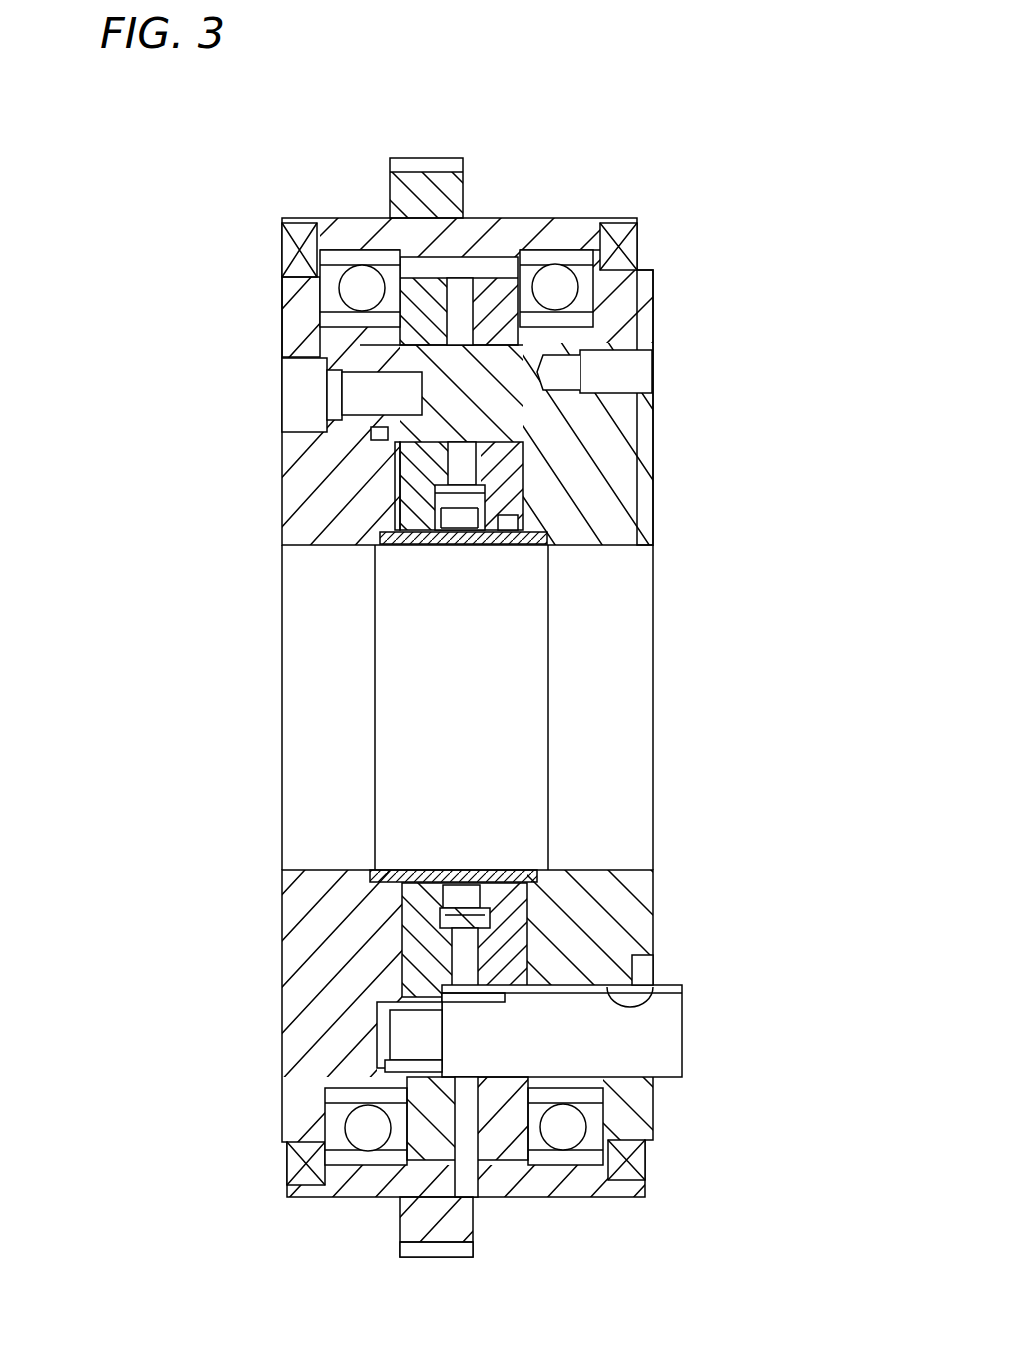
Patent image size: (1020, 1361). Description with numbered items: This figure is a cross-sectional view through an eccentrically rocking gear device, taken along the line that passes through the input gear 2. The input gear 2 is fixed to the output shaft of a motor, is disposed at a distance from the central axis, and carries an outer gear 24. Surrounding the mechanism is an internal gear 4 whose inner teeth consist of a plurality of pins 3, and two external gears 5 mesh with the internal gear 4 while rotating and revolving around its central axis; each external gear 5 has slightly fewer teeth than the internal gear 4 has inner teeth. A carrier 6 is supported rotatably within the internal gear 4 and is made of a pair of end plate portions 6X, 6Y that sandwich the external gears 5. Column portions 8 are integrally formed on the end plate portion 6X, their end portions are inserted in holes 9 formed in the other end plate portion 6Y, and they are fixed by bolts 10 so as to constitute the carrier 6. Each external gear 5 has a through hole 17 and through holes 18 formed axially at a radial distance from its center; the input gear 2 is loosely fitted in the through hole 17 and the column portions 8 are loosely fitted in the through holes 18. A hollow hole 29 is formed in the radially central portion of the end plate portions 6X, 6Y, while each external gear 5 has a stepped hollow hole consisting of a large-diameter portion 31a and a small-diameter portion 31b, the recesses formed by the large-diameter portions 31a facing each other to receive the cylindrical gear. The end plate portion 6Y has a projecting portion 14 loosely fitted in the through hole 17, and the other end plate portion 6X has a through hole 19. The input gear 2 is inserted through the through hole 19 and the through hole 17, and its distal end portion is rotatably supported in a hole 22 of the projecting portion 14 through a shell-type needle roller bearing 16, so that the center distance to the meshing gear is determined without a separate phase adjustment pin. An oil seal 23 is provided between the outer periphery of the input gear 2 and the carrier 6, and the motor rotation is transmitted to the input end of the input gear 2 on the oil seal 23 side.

The input gear 2 is at (680, 1057).
The pins 3 is at (485, 267).
The internal gear 4 is at (575, 222).
The external gears 5 is at (413, 307).
The carrier 6 is at (645, 290).
The end plate portion 6X is at (633, 330).
The end plate portion 6Y is at (285, 333).
The column portions 8 is at (453, 410).
The holes 9 is at (390, 430).
The bolts 10 is at (293, 395).
The projecting portion 14 is at (417, 977).
The shell-type needle roller bearing 16 is at (387, 1050).
The through hole 17 is at (500, 992).
The through holes 18 is at (398, 450).
The through hole 19 is at (670, 985).
The hole 22 is at (387, 1020).
The oil seal 23 is at (643, 1093).
The outer gear 24 is at (457, 1070).
The hollow hole 29 is at (332, 547).
The large-diameter portion 31a is at (523, 472).
The small-diameter portion 31b is at (500, 547).